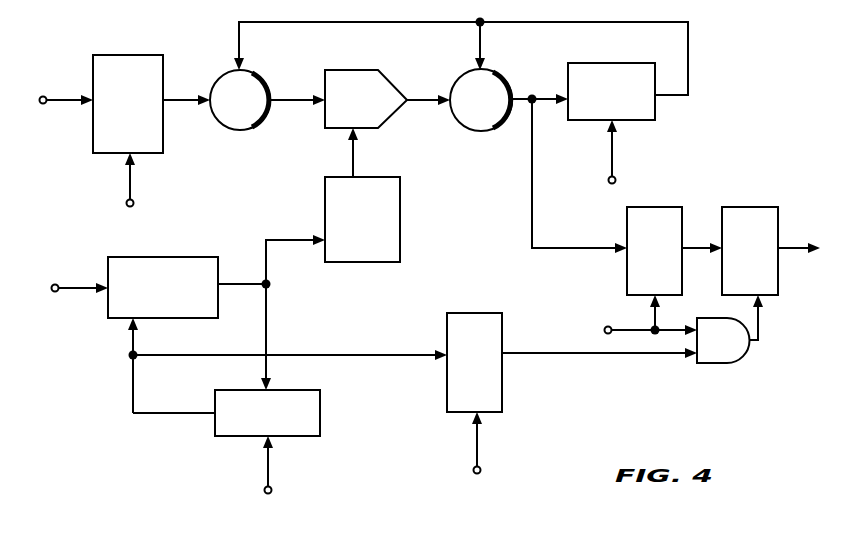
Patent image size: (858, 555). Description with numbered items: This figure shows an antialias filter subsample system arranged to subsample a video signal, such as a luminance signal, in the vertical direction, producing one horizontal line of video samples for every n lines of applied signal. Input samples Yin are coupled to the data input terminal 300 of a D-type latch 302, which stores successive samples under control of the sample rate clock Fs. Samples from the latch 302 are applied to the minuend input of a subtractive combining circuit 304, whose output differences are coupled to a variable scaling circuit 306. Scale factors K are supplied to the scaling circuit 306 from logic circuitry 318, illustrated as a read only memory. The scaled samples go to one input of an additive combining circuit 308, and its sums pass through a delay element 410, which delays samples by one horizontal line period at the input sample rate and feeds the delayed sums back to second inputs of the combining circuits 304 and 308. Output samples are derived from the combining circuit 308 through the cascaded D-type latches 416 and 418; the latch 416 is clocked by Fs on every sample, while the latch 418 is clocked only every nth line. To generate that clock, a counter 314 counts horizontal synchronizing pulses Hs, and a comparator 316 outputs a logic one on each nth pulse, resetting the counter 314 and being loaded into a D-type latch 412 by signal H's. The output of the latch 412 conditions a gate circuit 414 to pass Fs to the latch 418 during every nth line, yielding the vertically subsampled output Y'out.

The data input terminal 300 is at (43, 105).
The D-type latch 302 is at (128, 56).
The subtractive combining circuit 304 is at (262, 86).
The variable scaling circuit 306 is at (398, 66).
The additive combining circuit 308 is at (491, 131).
The counter 314 is at (160, 257).
The comparator 316 is at (322, 392).
The logic circuitry 318 is at (400, 210).
The delay element 410 is at (619, 63).
The D-type latch 412 is at (502, 383).
The gate circuit 414 is at (727, 364).
The D-type latch 416 is at (663, 207).
The D-type latch 418 is at (748, 207).